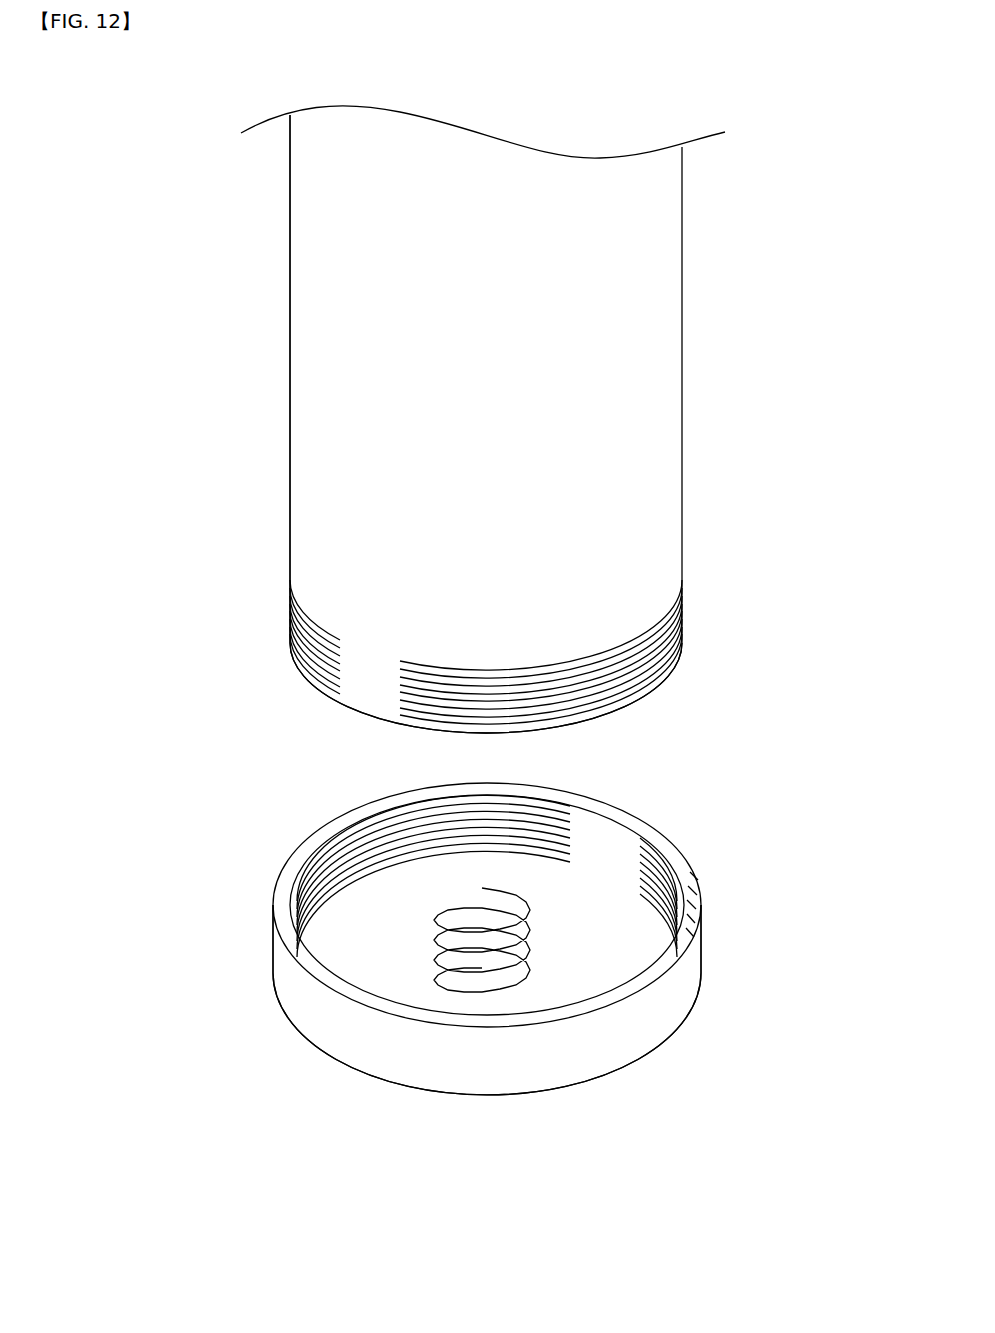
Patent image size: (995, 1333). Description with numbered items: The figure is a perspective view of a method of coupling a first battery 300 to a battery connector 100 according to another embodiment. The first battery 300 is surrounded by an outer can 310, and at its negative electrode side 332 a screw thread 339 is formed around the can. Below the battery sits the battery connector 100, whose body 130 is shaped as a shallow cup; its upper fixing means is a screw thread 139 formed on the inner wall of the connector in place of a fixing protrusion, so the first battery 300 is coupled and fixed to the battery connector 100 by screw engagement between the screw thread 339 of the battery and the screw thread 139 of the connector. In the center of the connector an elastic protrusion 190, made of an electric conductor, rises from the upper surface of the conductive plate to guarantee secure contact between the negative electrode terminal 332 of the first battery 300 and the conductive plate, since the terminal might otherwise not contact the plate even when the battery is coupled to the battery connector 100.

The battery connector 100 is at (327, 1083).
The cap body 130 is at (548, 1062).
The screw thread 139 is at (333, 855).
The elastic protrusion 190 is at (530, 950).
The first battery 300 is at (640, 262).
The outer can 310 is at (290, 352).
The negative electrode side 332 is at (347, 700).
The screw thread 339 is at (683, 635).